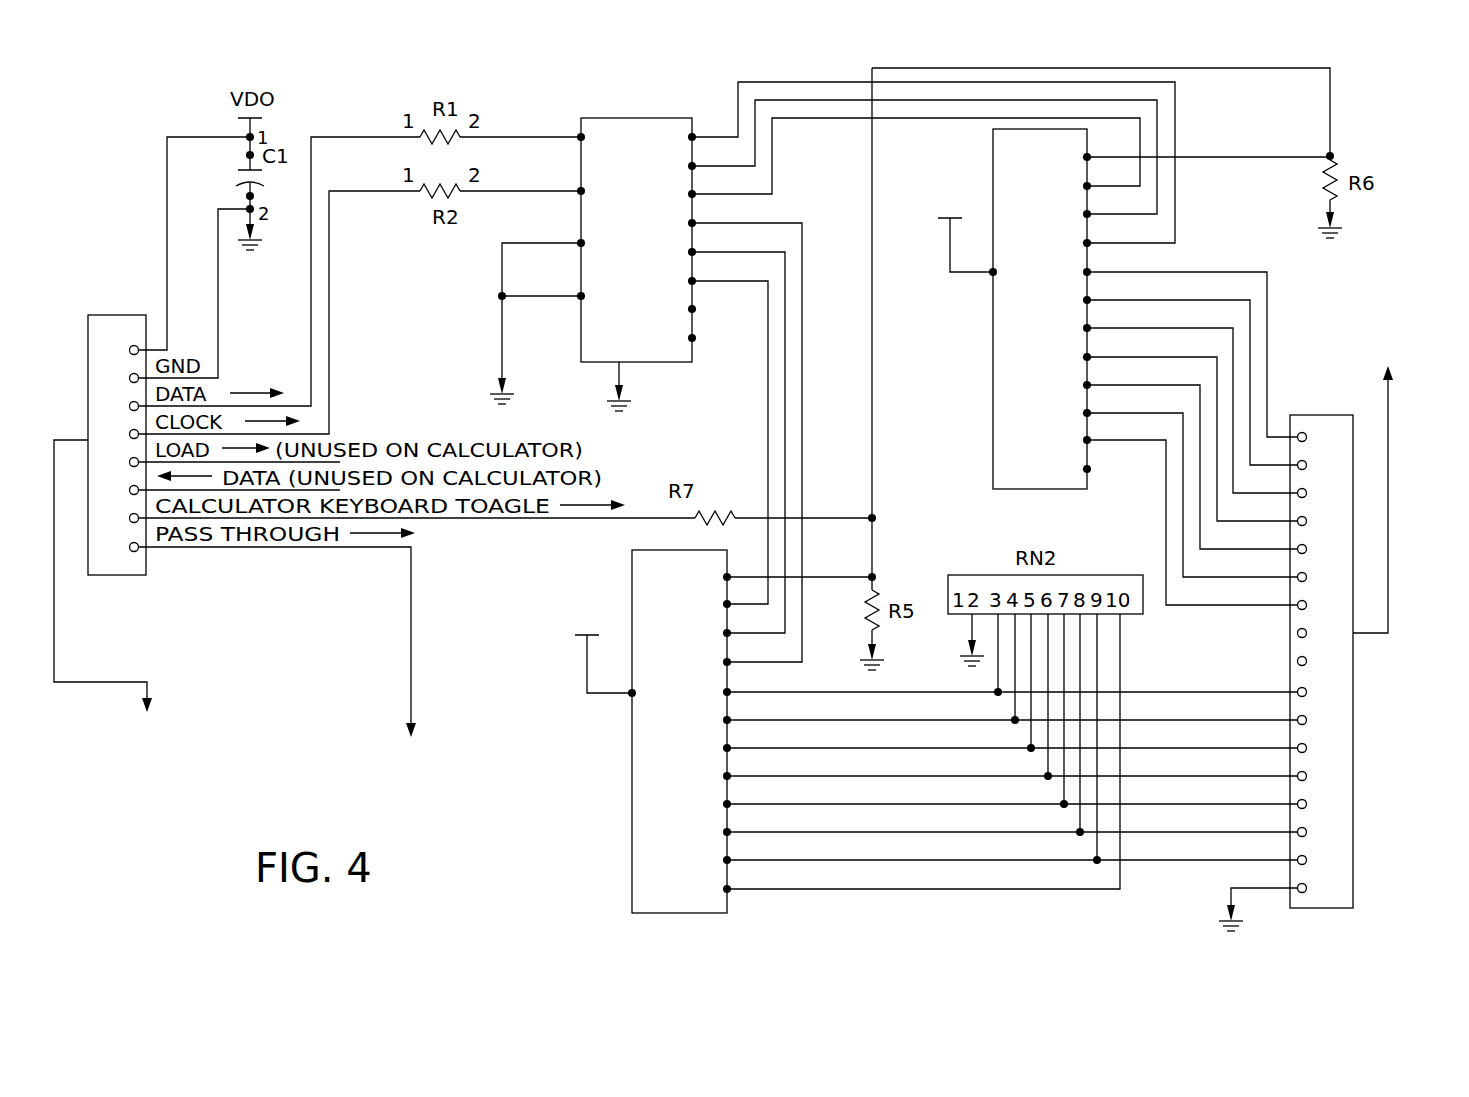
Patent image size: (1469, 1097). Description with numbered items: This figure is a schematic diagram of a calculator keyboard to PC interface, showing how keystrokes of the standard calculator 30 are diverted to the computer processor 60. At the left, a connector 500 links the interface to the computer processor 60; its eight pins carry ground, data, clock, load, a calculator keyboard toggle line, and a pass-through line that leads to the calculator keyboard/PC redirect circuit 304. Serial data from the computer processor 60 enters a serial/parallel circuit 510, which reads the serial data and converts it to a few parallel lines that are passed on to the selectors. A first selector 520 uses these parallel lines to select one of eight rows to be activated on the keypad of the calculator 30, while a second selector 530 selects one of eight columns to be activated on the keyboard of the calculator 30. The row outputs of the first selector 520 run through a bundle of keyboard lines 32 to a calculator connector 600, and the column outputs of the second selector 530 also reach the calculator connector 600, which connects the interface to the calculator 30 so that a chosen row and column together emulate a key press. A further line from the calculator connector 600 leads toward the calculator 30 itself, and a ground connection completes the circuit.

The connector 500 is at (125, 577).
The shift register U4A 510 is at (655, 118).
The first selector 520 is at (993, 330).
The second selector 530 is at (632, 843).
The calculator connector 600 is at (1353, 750).
The calculator keyboard lines 32 is at (1252, 318).
The standard calculator 30 is at (1369, 463).
The computer processor 60 is at (152, 622).
The calculator keyboard/PC redirect circuit 304 is at (329, 672).